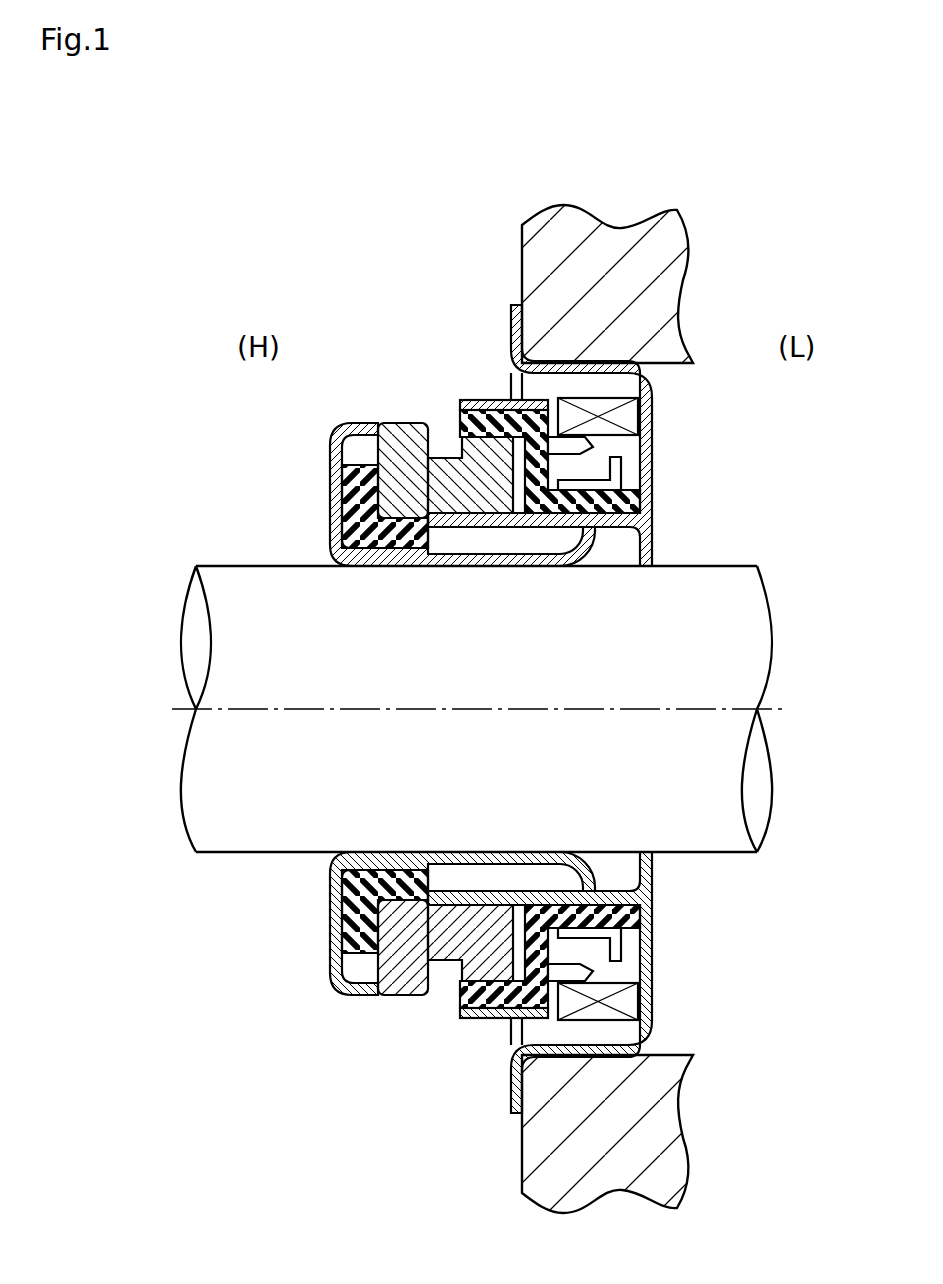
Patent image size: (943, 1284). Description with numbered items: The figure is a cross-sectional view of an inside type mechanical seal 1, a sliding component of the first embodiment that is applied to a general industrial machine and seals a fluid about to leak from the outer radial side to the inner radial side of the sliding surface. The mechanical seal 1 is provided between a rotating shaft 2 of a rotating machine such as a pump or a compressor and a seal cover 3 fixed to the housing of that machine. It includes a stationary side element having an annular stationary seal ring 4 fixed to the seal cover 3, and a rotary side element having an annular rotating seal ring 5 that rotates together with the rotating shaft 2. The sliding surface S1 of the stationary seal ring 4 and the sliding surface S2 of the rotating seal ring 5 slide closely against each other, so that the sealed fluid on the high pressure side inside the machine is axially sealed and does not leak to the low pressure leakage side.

The mechanical seal 1 is at (366, 273).
The rotating shaft 2 is at (708, 568).
The seal cover 3 is at (540, 272).
The stationary seal ring 4 is at (452, 472).
The rotating seal ring 5 is at (387, 426).
The sliding surface S1 is at (410, 470).
The sliding surface S2 is at (428, 518).